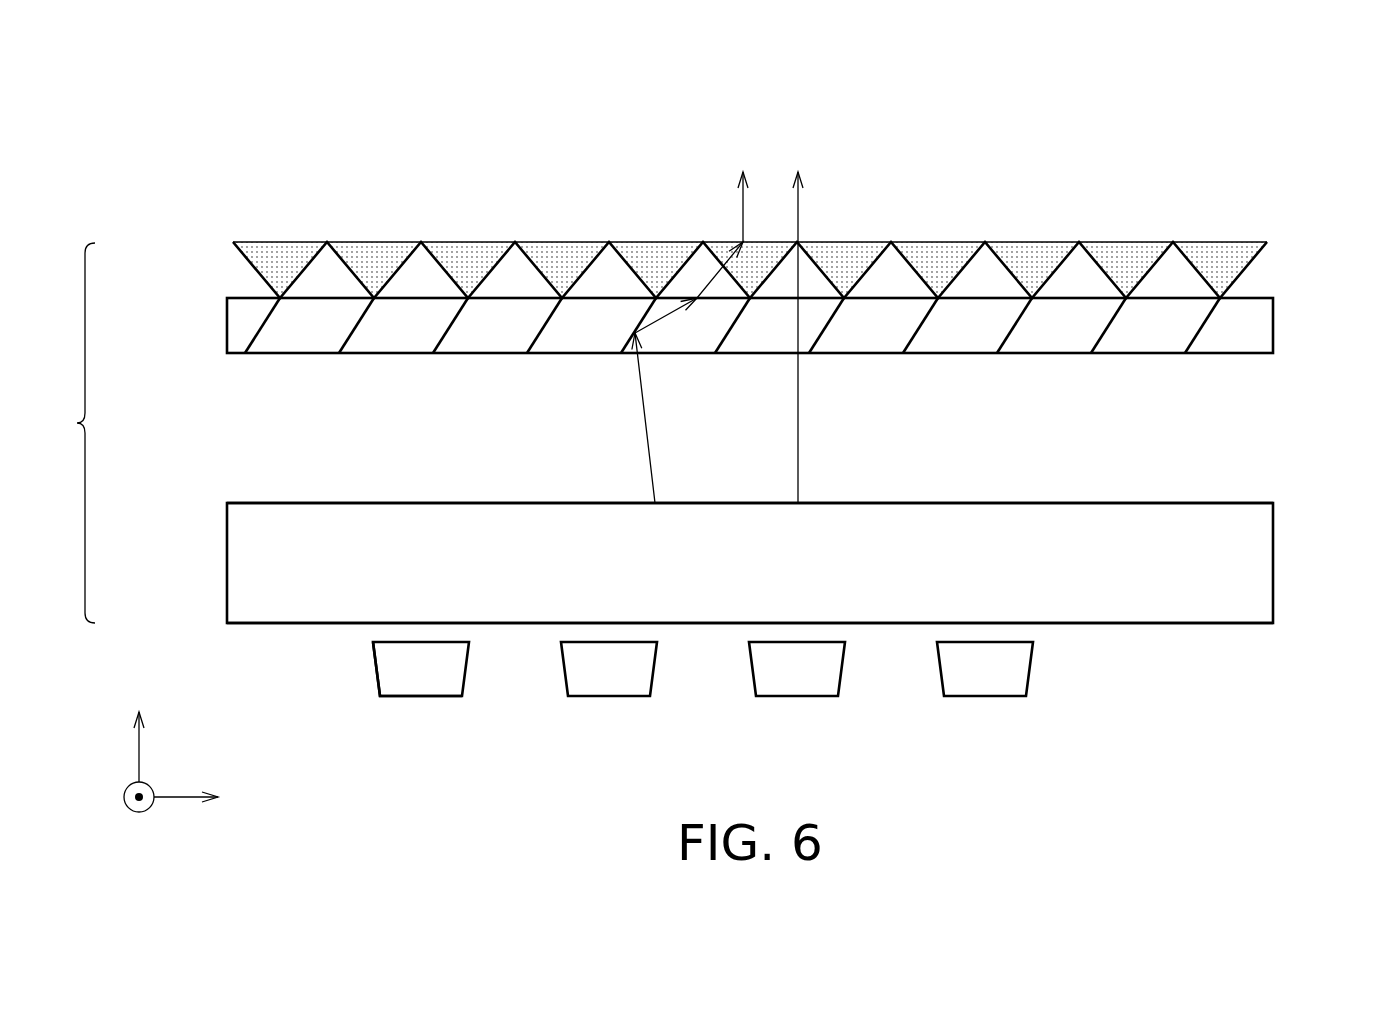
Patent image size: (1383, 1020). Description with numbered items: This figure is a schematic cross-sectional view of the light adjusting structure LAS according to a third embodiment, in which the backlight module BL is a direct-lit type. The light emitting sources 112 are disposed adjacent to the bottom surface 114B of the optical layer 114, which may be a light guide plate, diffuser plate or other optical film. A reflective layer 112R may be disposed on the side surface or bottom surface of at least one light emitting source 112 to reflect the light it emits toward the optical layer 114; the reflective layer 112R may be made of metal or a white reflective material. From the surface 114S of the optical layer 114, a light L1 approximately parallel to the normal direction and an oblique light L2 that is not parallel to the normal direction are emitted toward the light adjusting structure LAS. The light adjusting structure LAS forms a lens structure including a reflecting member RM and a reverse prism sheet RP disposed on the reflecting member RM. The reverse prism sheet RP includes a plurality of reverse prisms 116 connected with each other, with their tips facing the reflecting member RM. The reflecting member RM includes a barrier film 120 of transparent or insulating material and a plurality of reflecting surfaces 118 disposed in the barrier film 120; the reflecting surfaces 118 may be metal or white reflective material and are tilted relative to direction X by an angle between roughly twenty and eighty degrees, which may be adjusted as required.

The light adjusting structure LAS is at (1180, 135).
The backlight module BL is at (66, 433).
The reverse prism sheet RP is at (1268, 262).
The reflecting member RM is at (1245, 313).
The reverse prisms 116 is at (470, 258).
The reflecting surfaces 118 is at (452, 325).
The barrier film 120 is at (377, 335).
The light L1 is at (800, 378).
The oblique light L2 is at (678, 425).
The optical layer 114 is at (238, 558).
The surface of the optical layer 114S is at (1187, 503).
The bottom surface of the optical layer 114B is at (1190, 623).
The light emitting source 112 is at (391, 671).
The reflective layer 112R is at (375, 686).